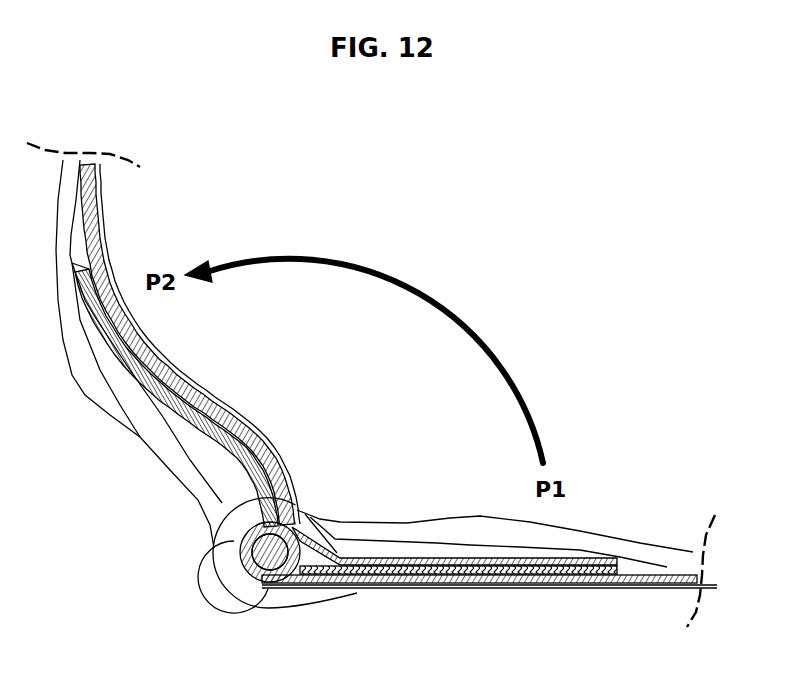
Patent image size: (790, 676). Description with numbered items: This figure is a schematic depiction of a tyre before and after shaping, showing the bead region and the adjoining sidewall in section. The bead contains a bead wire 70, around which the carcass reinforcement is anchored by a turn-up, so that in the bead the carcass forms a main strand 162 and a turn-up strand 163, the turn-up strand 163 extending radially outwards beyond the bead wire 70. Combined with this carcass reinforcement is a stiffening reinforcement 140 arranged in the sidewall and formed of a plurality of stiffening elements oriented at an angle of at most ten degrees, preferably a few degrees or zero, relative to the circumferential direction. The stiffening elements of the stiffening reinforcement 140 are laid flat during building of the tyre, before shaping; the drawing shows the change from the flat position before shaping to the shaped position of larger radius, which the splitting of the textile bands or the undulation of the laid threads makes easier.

The stiffening reinforcement 140 is at (165, 384).
The main strand 162 is at (213, 413).
The turn-up strand 163 is at (183, 417).
The bead wire 70 is at (268, 547).